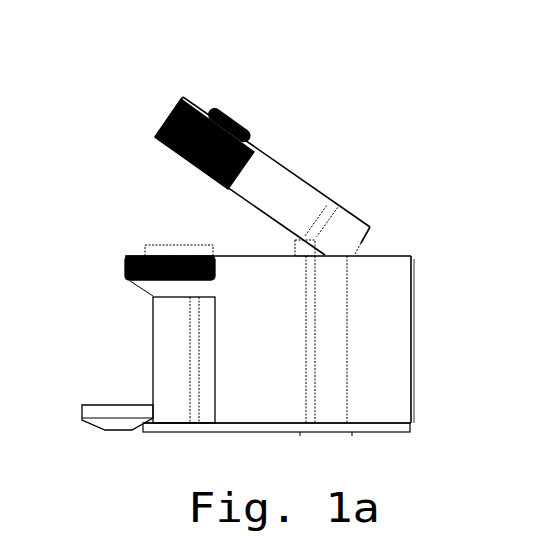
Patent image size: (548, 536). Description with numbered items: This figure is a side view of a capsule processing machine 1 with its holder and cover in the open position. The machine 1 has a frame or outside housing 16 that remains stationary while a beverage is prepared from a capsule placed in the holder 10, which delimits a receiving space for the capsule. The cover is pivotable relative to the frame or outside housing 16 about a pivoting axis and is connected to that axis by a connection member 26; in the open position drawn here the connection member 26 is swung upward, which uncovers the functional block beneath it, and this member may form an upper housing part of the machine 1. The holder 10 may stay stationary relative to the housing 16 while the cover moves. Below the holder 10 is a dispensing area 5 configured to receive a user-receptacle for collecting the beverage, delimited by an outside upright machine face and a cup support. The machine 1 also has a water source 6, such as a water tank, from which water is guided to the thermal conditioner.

The capsule processing machine 1 is at (353, 70).
The dispensing area 5 is at (112, 348).
The water source 6 is at (397, 318).
The holder 10 is at (187, 245).
The frame or outside housing 16 is at (268, 404).
The connection member 26 is at (289, 203).